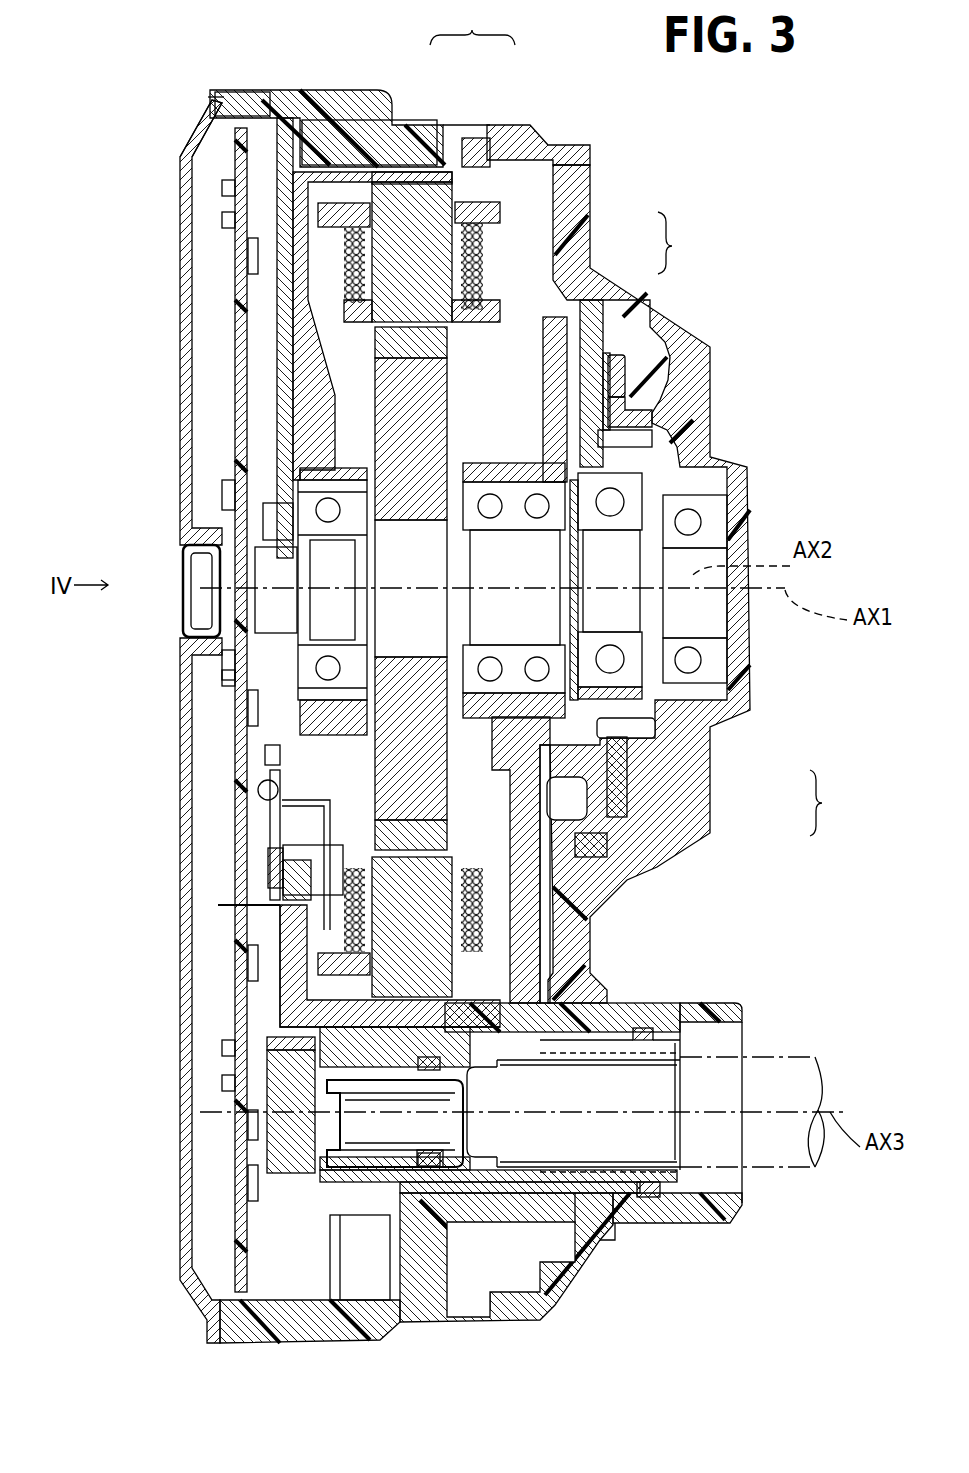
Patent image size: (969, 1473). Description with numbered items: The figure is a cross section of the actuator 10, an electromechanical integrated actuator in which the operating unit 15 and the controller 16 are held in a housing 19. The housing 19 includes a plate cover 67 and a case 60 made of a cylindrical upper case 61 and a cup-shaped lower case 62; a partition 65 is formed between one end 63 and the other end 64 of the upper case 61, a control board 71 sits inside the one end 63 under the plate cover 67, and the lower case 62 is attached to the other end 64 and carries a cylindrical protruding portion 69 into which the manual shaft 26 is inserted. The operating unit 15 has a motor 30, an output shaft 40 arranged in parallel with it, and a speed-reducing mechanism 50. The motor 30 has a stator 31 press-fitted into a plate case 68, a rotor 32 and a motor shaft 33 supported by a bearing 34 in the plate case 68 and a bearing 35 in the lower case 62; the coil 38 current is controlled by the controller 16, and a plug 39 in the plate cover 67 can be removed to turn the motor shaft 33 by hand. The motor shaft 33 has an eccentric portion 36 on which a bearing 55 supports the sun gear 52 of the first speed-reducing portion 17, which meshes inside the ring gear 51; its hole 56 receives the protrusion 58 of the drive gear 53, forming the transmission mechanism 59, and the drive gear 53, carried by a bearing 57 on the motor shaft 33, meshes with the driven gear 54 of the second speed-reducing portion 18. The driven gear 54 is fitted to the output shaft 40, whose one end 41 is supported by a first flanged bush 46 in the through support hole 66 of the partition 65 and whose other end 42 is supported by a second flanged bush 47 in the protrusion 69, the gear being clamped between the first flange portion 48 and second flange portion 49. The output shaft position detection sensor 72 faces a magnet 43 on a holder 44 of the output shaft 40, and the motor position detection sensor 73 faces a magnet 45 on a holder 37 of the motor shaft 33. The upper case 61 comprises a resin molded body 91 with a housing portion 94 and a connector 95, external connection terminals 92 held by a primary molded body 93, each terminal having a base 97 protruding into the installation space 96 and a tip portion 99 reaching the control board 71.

The actuator 10 is at (192, 82).
The operating unit 15 is at (555, 148).
The controller 16 is at (210, 135).
The first speed-reducing portion 17 is at (590, 296).
The second speed-reducing portion 18 is at (551, 305).
The housing 19 is at (286, 90).
The manual shaft 26 is at (787, 1167).
The motor 30 is at (505, 212).
The stator 31 is at (400, 300).
The rotor 32 is at (385, 345).
The motor shaft 33 is at (320, 568).
The bearing 34 is at (298, 472).
The bearing 35 is at (750, 667).
The eccentric portion 36 is at (750, 511).
The holder 37 is at (260, 540).
The coil 38 is at (310, 980).
The plug 39 is at (182, 608).
The output shaft 40 is at (595, 997).
The one end 41 is at (370, 1218).
The other end 42 is at (640, 1012).
The magnet 43 is at (280, 1145).
The holder 44 is at (255, 1210).
The magnet 45 is at (262, 492).
The first flanged bush 46 is at (420, 1185).
The second flanged bush 47 is at (597, 1200).
The first flange portion 48 is at (450, 1312).
The second flange portion 49 is at (560, 1240).
The speed-reducing mechanism 50 is at (680, 243).
The ring gear 51 is at (650, 407).
The sun gear 52 is at (635, 370).
The drive gear 53 is at (620, 340).
The driven gear 54 is at (525, 890).
The bearing 55 is at (740, 693).
The hole 56 is at (620, 787).
The bearing 57 is at (660, 462).
The protrusion 58 is at (620, 813).
The transmission mechanism 59 is at (828, 803).
The case 60 is at (472, 27).
The upper case 61 is at (447, 140).
The lower case 62 is at (510, 135).
The one end 63 is at (250, 96).
The other end 64 is at (345, 108).
The partition 65 is at (283, 386).
The through support hole 66 is at (325, 1175).
The plate cover 67 is at (185, 243).
The plate case 68 is at (383, 180).
The cylindrical protruding portion 69 is at (680, 1222).
The control board 71 is at (240, 165).
The output shaft position detection sensor 72 is at (250, 1120).
The motor position detection sensor 73 is at (235, 510).
The resin molded body 91 is at (265, 875).
The external connection terminals 92 is at (265, 763).
The primary molded body 93 is at (265, 852).
The housing portion 94 is at (270, 830).
The connector 95 is at (255, 782).
The installation space 96 is at (265, 880).
The base 97 is at (225, 905).
The tip portion 99 is at (255, 798).